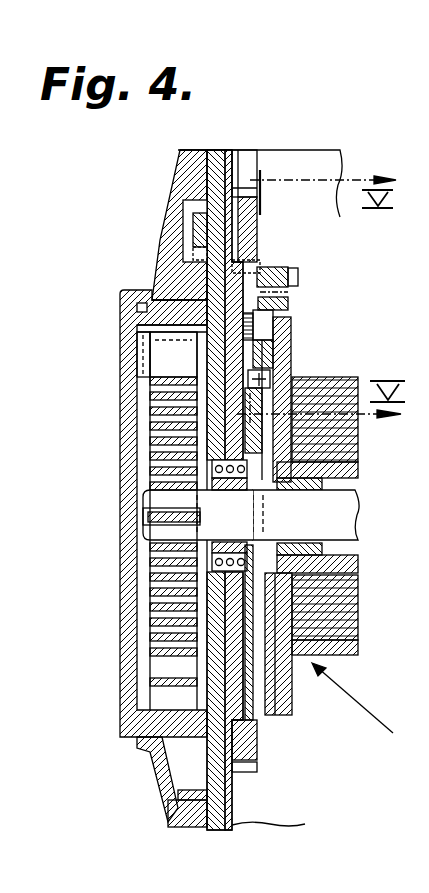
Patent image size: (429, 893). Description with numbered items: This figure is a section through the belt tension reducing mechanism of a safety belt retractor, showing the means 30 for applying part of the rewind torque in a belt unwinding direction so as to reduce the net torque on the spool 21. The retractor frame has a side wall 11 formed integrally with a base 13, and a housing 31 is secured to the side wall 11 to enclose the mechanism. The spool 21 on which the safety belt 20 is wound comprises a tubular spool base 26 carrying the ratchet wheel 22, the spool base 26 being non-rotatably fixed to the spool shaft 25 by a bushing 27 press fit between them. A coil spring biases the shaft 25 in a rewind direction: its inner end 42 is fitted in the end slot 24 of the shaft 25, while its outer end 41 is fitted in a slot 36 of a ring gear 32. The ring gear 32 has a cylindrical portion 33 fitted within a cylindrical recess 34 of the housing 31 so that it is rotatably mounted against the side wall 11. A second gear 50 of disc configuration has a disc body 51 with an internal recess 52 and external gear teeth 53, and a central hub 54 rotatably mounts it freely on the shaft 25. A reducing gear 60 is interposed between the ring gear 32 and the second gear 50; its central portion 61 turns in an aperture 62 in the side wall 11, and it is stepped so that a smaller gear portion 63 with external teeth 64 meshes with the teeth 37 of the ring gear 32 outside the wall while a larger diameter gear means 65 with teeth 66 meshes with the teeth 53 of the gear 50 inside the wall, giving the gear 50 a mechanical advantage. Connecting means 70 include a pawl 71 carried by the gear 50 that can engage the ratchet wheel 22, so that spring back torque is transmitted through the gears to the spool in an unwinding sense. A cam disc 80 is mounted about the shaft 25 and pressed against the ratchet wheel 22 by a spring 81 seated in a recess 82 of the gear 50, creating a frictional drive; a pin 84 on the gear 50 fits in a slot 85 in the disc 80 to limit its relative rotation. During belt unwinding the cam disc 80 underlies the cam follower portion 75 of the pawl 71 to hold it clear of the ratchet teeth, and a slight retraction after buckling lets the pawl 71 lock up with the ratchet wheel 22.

The side wall 11 is at (168, 808).
The base 13 is at (337, 158).
The safety belt 20 is at (345, 657).
The spool 21 is at (363, 704).
The ratchet wheel 22 is at (283, 690).
The end slot 24 is at (172, 512).
The spool shaft 25 is at (342, 512).
The tubular spool base 26 is at (354, 566).
The bushing 27 is at (292, 490).
The tension reducing means 30 is at (140, 253).
The housing 31 is at (160, 770).
The ring gear 32 is at (168, 282).
The cylindrical portion 33 is at (153, 318).
The cylindrical recess 34 is at (140, 308).
The slot 36 is at (143, 340).
The teeth 37 is at (172, 250).
The outer end 41 is at (170, 338).
The inner end 42 is at (167, 530).
The second gear 50 is at (260, 277).
The disc body 51 is at (252, 755).
The internal recess 52 is at (253, 717).
The external gear teeth 53 is at (248, 770).
The central hub 54 is at (212, 575).
The reducing gear 60 is at (260, 228).
The central portion 61 is at (222, 150).
The aperture 62 is at (260, 252).
The smaller gear portion 63 is at (172, 245).
The external teeth 64 is at (195, 237).
The larger diameter gear means 65 is at (262, 222).
The teeth 66 is at (241, 193).
The selective connecting means 70 is at (315, 289).
The pawl 71 is at (303, 275).
The cam follower portion 75 is at (266, 328).
The cam disc 80 is at (253, 437).
The spring 81 is at (213, 556).
The recess 82 is at (217, 473).
The pin 84 is at (275, 382).
The slot 85 is at (270, 372).